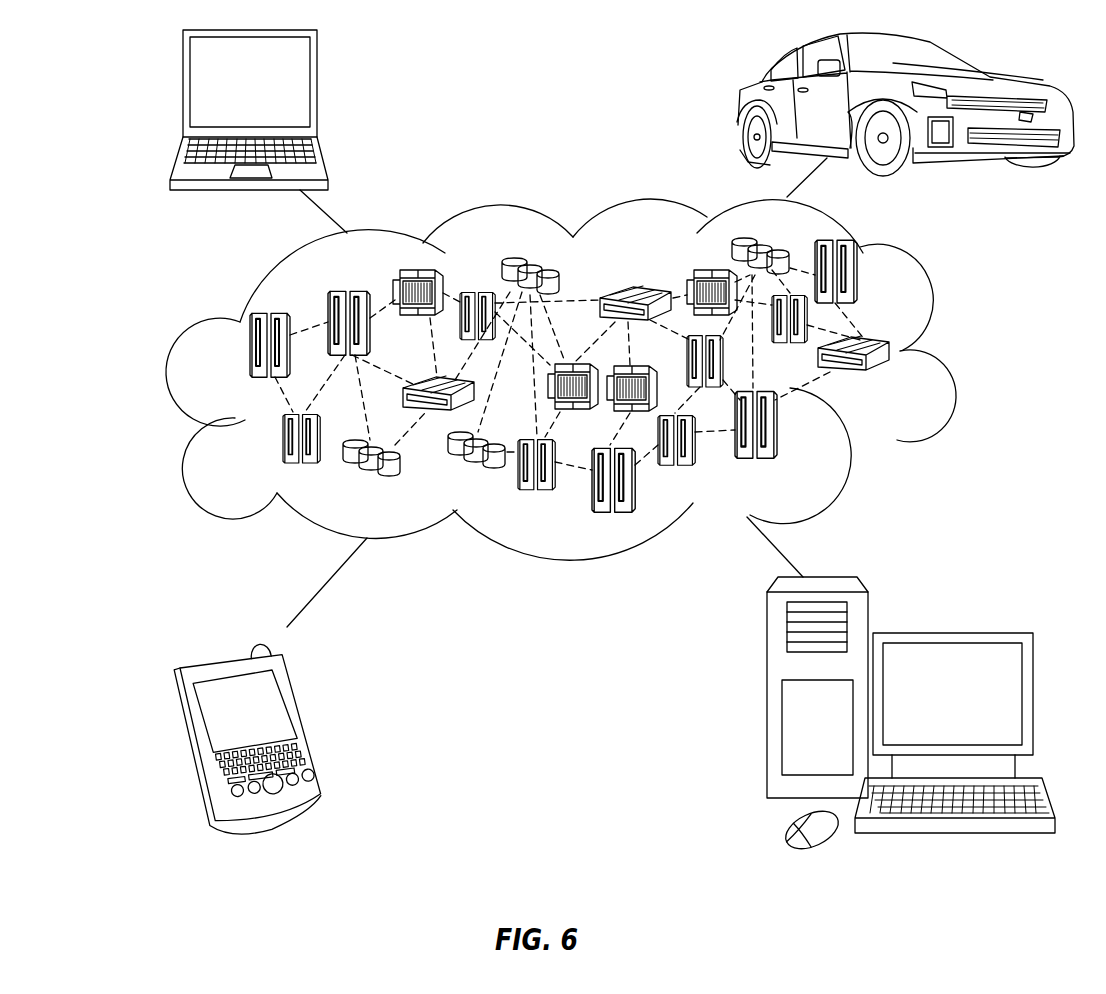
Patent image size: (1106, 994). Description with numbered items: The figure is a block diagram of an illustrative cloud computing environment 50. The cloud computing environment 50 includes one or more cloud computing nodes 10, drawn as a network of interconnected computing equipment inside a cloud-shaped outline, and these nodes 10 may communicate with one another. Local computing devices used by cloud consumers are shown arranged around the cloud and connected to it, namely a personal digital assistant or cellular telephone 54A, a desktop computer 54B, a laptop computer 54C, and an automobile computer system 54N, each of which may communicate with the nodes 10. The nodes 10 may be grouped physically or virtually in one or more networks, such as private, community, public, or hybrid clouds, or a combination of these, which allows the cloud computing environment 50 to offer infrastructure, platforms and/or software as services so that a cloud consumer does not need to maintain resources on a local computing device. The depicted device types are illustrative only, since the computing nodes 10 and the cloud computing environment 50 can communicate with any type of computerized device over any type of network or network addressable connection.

The personal digital assistant or cellular telephone 54A is at (306, 722).
The desktop computer 54B is at (950, 633).
The laptop computer 54C is at (317, 90).
The automobile computer system 54N is at (742, 102).
The cloud computing environment 50 is at (952, 352).
The cloud computing node 10 is at (900, 386).